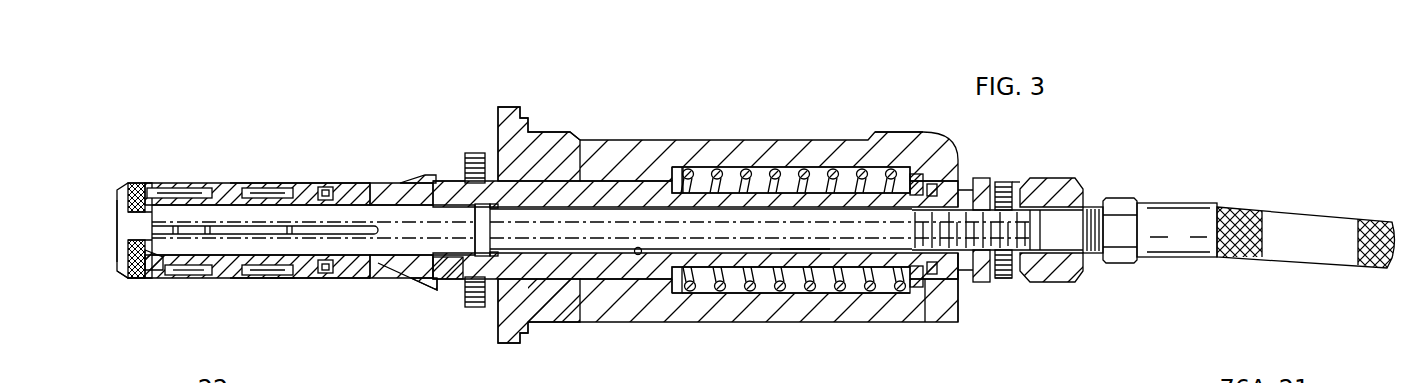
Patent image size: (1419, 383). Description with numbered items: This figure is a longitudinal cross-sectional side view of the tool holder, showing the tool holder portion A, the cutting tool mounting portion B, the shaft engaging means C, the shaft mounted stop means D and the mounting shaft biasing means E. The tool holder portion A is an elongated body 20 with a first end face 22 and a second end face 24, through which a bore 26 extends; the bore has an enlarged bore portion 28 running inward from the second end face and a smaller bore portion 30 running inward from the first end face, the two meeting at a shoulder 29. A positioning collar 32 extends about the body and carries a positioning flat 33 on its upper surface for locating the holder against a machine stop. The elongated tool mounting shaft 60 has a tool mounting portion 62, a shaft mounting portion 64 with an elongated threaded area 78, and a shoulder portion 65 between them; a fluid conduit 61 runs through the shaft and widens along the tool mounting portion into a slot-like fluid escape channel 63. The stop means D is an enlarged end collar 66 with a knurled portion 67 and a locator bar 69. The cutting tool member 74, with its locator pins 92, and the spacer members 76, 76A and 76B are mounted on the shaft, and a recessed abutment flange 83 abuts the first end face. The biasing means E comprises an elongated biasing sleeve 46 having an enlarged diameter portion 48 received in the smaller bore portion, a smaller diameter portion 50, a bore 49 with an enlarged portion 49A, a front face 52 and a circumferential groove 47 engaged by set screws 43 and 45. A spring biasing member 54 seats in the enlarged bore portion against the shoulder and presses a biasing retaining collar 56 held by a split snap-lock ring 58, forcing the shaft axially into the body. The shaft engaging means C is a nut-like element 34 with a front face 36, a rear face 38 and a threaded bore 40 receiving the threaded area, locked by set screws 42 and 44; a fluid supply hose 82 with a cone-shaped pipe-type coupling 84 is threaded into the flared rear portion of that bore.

The elongated body 20 is at (827, 321).
The first end face 22 is at (424, 176).
The second end face 24 is at (958, 300).
The bore 26 is at (703, 295).
The first, enlarged bore portion 28 is at (765, 289).
The shoulder 29 is at (677, 294).
The second, smaller bore portion 30 is at (587, 279).
The positioning collar 32 is at (510, 107).
The positioning flat 33 is at (627, 139).
The nut-like element 34 is at (1059, 168).
The front face 36 is at (973, 182).
The rear face 38 is at (1088, 206).
The threaded bore 40 is at (1060, 252).
The set screw 42 is at (1003, 182).
The set screw 43 is at (475, 153).
The set screw 44 is at (1007, 279).
The set screw 45 is at (473, 308).
The elongated biasing sleeve 46 is at (513, 270).
The circumferential groove 47 is at (462, 180).
The enlarged diameter portion 48 is at (499, 330).
The bore 49 is at (638, 256).
The enlarged portion 49A is at (447, 262).
The smaller diameter portion 50 is at (735, 263).
The front face 52 is at (398, 182).
The spring biasing member 54 is at (712, 176).
The biasing retaining collar 56 is at (921, 287).
The split snap-lock ring 58 is at (932, 275).
The tool mounting shaft 60 is at (583, 207).
The fluid conduit 61 is at (400, 240).
The tool mounting portion 62 is at (303, 212).
The fluid escape channel 63 is at (223, 226).
The shaft mounting portion 64 is at (797, 250).
The shoulder portion 65 is at (489, 207).
The end collar 66 is at (121, 196).
The knurled portion 67 is at (131, 279).
The locator bar 69 is at (154, 270).
The cutting tool member 74 is at (197, 182).
The spacer member 76 is at (157, 181).
The second spacer member 76A is at (240, 181).
The spacer member 76B is at (350, 181).
The threaded area 78 is at (950, 222).
The fluid supply hose 82 is at (1305, 222).
The recessed abutment flange 83 is at (418, 283).
The pipe-type coupling 84 is at (1170, 210).
The locator pins 92 is at (180, 188).
The tool holder portion A is at (877, 121).
The cutting tool mounting portion B is at (279, 296).
The shaft engaging means C is at (1019, 160).
The shaft mounted stop means D is at (103, 262).
The mounting shaft biasing means E is at (773, 176).